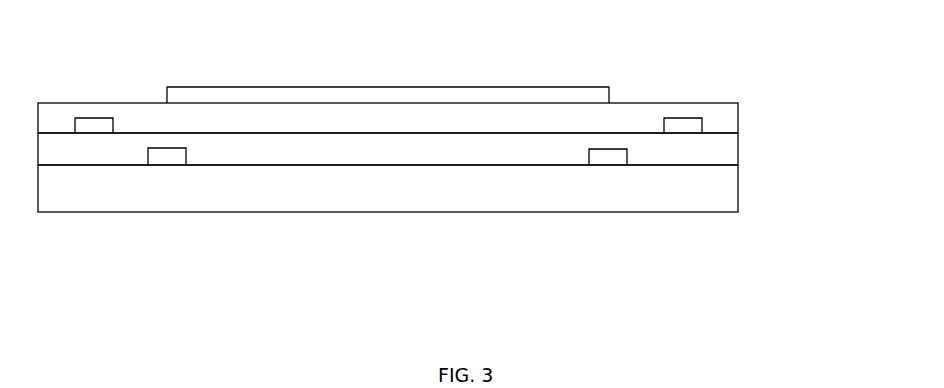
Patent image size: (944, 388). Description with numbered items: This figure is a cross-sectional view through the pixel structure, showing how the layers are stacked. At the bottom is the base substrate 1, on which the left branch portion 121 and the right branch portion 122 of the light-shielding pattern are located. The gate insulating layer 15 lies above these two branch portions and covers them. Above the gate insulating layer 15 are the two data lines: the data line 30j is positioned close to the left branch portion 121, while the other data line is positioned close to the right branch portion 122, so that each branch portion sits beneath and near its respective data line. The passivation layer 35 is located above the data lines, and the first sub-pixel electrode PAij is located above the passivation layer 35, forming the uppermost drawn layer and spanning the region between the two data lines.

The base substrate 1 is at (720, 198).
The gate insulating layer 15 is at (717, 152).
The passivation layer 35 is at (717, 117).
The first sub-pixel electrode PAij is at (387, 92).
The data line 30j is at (92, 126).
The left branch portion 121 is at (165, 155).
The right branch portion 122 is at (609, 157).